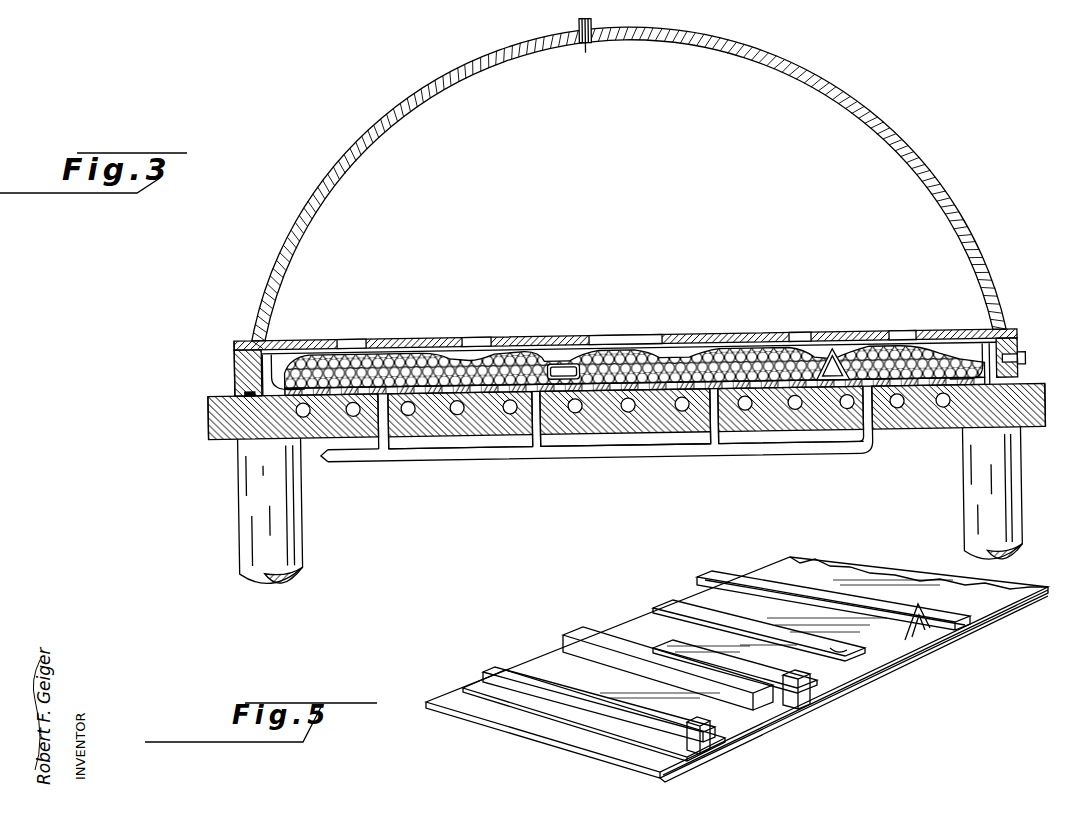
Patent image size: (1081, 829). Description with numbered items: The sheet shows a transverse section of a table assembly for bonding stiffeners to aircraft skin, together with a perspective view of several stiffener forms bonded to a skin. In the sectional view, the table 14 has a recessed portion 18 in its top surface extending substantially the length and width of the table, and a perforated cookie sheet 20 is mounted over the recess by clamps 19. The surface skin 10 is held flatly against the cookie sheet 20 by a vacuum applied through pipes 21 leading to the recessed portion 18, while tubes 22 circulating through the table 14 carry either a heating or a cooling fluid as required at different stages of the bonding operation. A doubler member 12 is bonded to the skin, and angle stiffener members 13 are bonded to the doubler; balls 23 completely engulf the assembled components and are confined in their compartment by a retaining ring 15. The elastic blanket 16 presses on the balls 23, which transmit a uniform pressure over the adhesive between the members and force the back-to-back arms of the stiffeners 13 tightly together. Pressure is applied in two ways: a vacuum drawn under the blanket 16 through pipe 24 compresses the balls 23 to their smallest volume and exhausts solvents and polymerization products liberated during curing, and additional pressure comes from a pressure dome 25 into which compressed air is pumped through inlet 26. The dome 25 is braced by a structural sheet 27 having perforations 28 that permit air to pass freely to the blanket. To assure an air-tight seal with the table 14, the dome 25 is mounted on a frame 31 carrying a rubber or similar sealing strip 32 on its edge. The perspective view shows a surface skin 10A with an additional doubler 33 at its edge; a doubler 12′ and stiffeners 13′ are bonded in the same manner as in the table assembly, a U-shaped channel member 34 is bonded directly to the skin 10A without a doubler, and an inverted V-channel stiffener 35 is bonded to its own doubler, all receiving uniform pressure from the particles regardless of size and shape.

In FIG. 3, the surface skin 10 is at (665, 384).
In FIG. 5, the surface skin 10A is at (580, 735).
In FIG. 3, the doubler member 12 is at (370, 388).
In FIG. 5, the doubler 12′ is at (466, 686).
In FIG. 3, the angle stiffener member 13 is at (395, 348).
In FIG. 5, the stiffener 13′ is at (500, 670).
In FIG. 3, the table 14 is at (222, 392).
In FIG. 3, the retaining ring 15 is at (990, 345).
In FIG. 3, the elastic blanket 16 is at (420, 347).
In FIG. 3, the recessed portion 18 is at (340, 392).
In FIG. 3, the clamps 19 is at (310, 468).
In FIG. 3, the perforated cookie sheet 20 is at (776, 390).
In FIG. 3, the pipes 21 is at (385, 404).
In FIG. 3, the tubes 22 is at (506, 408).
In FIG. 3, the balls 23 is at (500, 350).
In FIG. 3, the pipe 24 is at (1026, 366).
In FIG. 3, the pressure dome 25 is at (882, 122).
In FIG. 3, the inlet 26 is at (600, 26).
In FIG. 3, the structural sheet 27 is at (320, 335).
In FIG. 3, the perforations 28 is at (354, 335).
In FIG. 3, the frame 31 is at (236, 362).
In FIG. 3, the sealing strip 32 is at (627, 411).
In FIG. 5, the doubler 33 is at (738, 735).
In FIG. 3, the U-shaped channel member 34 is at (542, 365).
In FIG. 5, the U-shaped channel member 34 is at (588, 640).
In FIG. 3, the inverted V-channel stiffener 35 is at (848, 352).
In FIG. 5, the inverted V-channel stiffener 35 is at (697, 578).